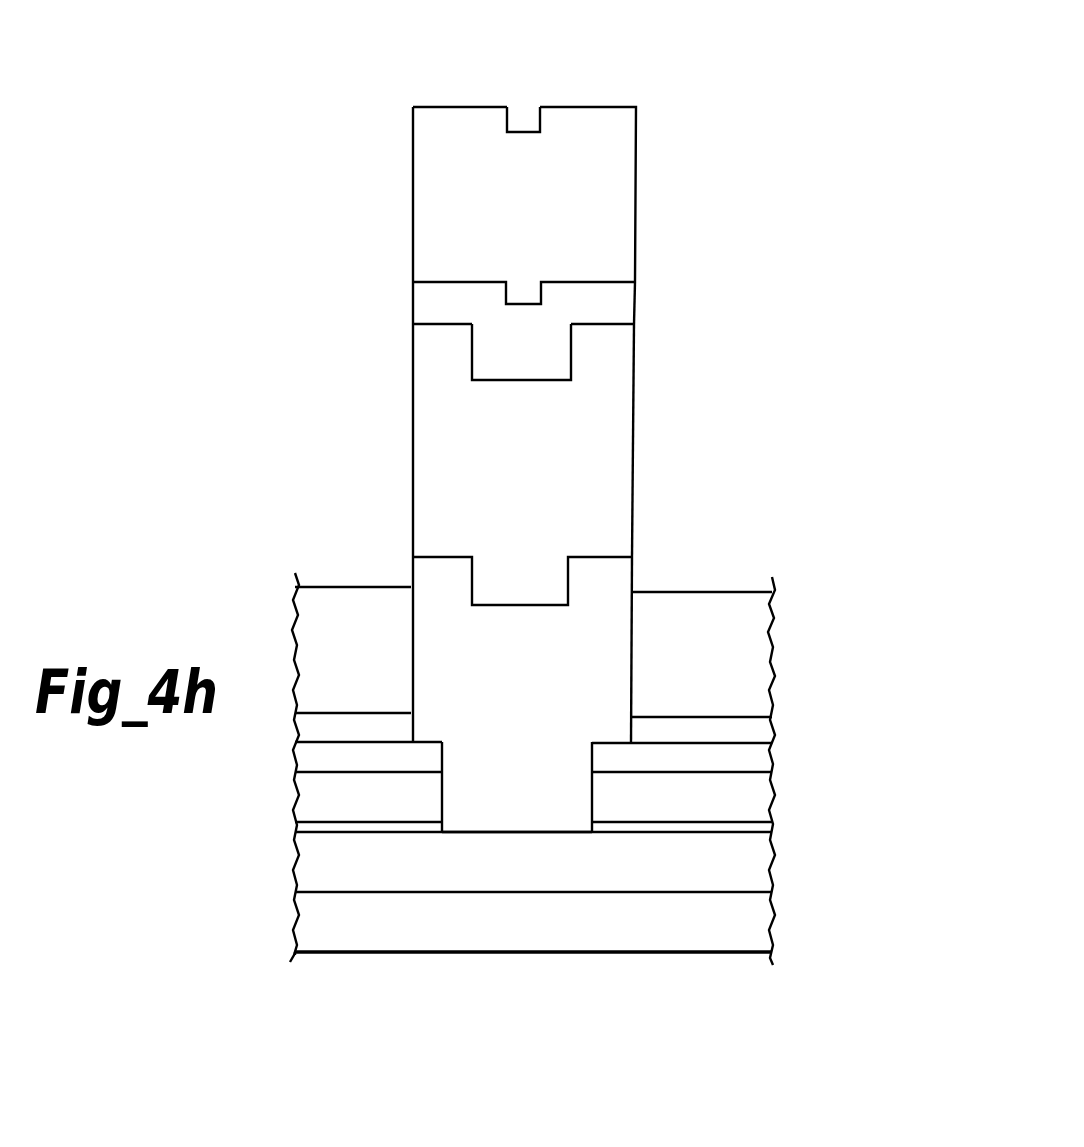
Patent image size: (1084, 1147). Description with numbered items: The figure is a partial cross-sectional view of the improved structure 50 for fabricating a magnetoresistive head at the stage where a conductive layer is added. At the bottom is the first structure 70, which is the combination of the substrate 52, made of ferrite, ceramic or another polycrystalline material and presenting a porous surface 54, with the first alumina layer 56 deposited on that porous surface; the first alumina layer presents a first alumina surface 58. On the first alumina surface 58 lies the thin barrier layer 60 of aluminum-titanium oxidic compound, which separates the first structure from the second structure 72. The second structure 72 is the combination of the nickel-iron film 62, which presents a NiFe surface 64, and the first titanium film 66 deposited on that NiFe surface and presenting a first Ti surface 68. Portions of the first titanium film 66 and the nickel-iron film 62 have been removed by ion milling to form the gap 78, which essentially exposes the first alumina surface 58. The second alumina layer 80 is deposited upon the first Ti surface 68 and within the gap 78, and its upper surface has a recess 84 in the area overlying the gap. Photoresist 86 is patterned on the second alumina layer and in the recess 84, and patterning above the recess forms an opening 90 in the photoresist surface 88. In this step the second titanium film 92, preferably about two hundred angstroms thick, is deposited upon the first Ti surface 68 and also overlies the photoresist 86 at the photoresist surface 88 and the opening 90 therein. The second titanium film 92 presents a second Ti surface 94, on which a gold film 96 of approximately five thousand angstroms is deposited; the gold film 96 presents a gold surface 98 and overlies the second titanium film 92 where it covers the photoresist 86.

The improved structure 50 is at (153, 520).
The substrate 52 is at (743, 922).
The porous surface 54 is at (767, 890).
The first alumina layer 56 is at (748, 867).
The first alumina surface 58 is at (770, 810).
The barrier layer 60 is at (282, 831).
The nickel-iron film 62 is at (743, 827).
The NiFe surface 64 is at (755, 802).
The first titanium film 66 is at (757, 772).
The first Ti surface 68 is at (753, 737).
The first structure 70 is at (261, 887).
The second structure 72 is at (272, 766).
The gap 78 is at (470, 784).
The second alumina layer 80 is at (597, 623).
The recess 84 is at (503, 564).
The photoresist 86 is at (635, 368).
The photoresist surface 88 is at (620, 322).
The opening 90 is at (503, 354).
The second titanium film 92 is at (623, 298).
The second Ti surface 94 is at (617, 278).
The gold film 96 is at (630, 127).
The gold surface 98 is at (560, 107).